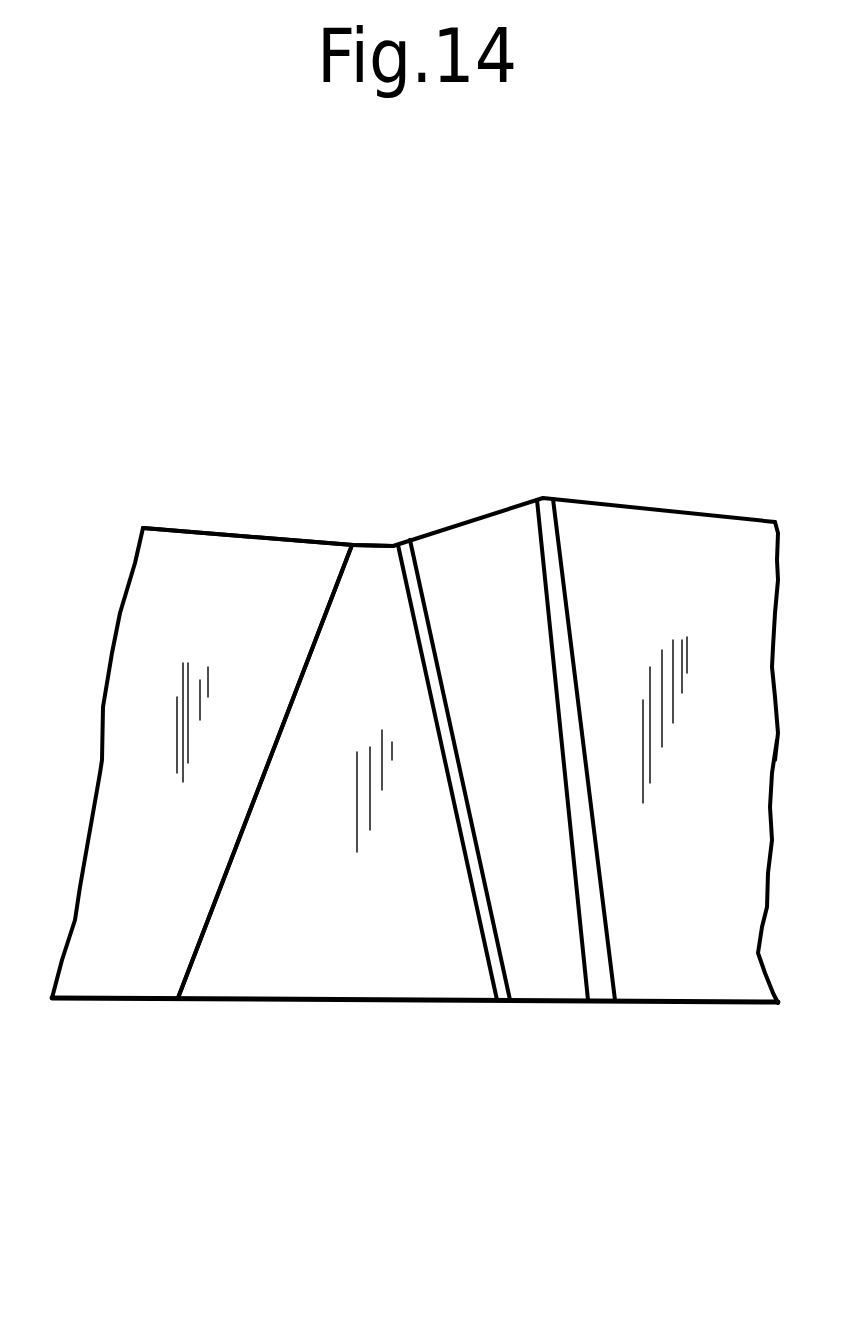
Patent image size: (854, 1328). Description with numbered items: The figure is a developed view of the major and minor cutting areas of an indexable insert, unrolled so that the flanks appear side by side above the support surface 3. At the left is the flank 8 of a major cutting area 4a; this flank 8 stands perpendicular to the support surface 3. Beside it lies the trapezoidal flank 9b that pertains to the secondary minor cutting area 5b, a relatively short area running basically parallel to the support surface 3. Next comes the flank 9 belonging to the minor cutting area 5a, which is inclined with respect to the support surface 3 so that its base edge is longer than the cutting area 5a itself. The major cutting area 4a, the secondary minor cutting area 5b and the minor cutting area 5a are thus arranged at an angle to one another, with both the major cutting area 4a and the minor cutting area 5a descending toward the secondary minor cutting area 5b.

The support surface 3 is at (298, 1003).
The major cutting area 4a is at (232, 533).
The minor cutting area 5a is at (472, 518).
The secondary minor cutting area 5b is at (370, 545).
The flank 8 is at (123, 973).
The flank 9 is at (553, 963).
The flank 9b is at (402, 945).